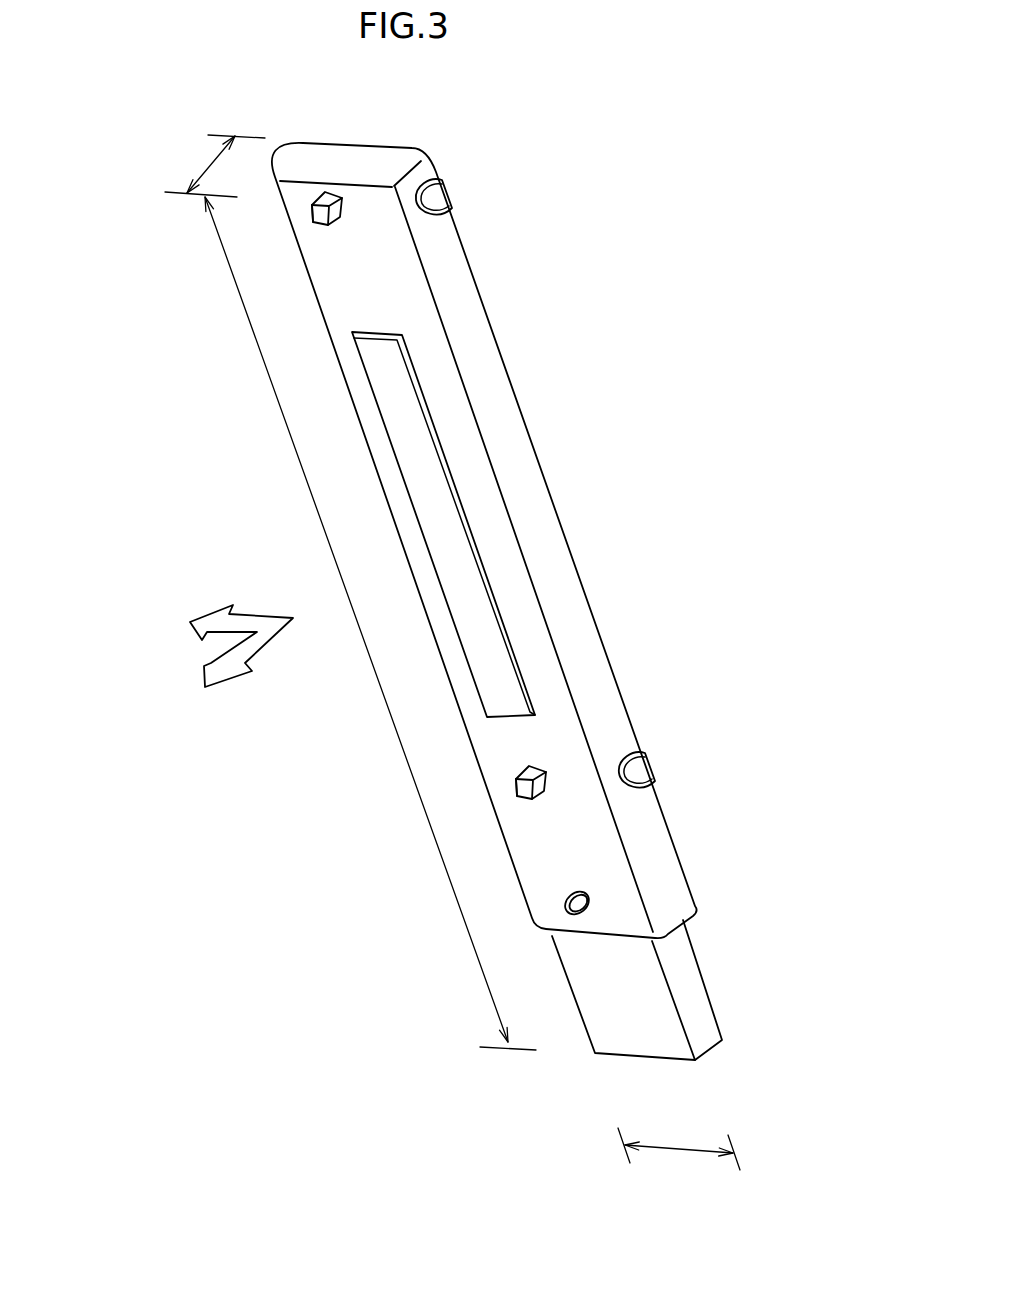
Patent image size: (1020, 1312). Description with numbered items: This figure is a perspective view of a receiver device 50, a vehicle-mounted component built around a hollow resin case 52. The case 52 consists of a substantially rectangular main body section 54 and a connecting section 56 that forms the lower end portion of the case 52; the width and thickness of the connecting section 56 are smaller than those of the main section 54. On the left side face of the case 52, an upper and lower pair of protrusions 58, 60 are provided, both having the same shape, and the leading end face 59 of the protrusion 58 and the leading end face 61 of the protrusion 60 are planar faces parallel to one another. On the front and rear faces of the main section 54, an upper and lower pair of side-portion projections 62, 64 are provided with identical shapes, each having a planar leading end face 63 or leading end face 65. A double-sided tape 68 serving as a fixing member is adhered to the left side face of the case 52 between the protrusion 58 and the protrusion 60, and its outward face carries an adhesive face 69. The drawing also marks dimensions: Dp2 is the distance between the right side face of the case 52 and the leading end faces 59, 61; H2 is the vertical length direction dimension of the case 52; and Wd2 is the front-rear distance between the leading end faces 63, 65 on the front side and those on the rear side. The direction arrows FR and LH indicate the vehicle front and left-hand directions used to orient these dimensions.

The receiver device 50 is at (527, 601).
The case 52 is at (470, 314).
The main body section 54 is at (604, 683).
The connecting section 56 is at (692, 983).
The protrusion 58 is at (340, 208).
The leading end face 59 is at (323, 222).
The protrusion 60 is at (548, 787).
The leading end face 61 is at (527, 797).
The side-portion projection 62 is at (436, 211).
The leading end face 63 is at (440, 193).
The side-portion projection 64 is at (645, 765).
The leading end face 65 is at (640, 786).
The double-sided tape 68 is at (465, 582).
The adhesive face 69 is at (495, 652).
The length direction dimension H2 is at (281, 410).
The distance Dp2 is at (210, 150).
The distance Wd2 is at (675, 1148).
The front direction FR is at (220, 646).
The left direction LH is at (199, 709).